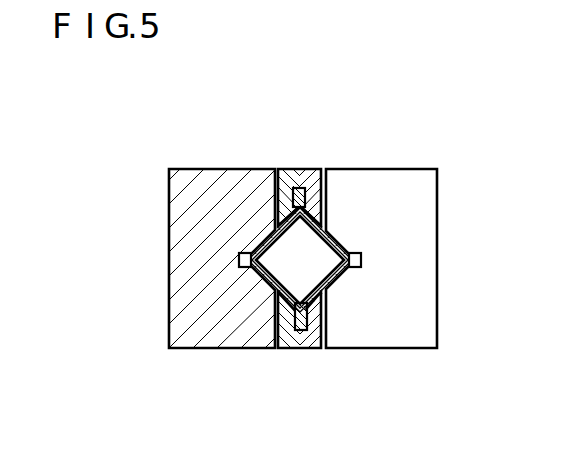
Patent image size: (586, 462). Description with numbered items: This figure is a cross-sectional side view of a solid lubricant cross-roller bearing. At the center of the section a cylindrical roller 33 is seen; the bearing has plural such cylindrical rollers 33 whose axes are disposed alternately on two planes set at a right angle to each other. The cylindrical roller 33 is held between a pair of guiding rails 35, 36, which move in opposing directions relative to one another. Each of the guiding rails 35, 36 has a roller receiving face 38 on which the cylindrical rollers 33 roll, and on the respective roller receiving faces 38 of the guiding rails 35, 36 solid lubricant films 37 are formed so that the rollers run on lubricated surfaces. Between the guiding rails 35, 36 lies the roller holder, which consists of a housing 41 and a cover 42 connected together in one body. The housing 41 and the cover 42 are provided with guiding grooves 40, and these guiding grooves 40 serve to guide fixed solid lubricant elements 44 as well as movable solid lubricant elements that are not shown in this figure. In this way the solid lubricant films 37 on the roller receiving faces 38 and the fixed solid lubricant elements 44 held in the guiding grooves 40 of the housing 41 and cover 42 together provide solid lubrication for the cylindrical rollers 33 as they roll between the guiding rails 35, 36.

The cylindrical roller 33 is at (328, 277).
The guiding rail 35 is at (192, 205).
The guiding rail 36 is at (418, 256).
The solid lubricant film 37 is at (260, 243).
The roller receiving face 38 is at (255, 246).
The guiding groove 40 is at (298, 190).
The housing 41 is at (285, 188).
The cover 42 is at (320, 172).
The fixed solid lubricant element 44 is at (306, 322).